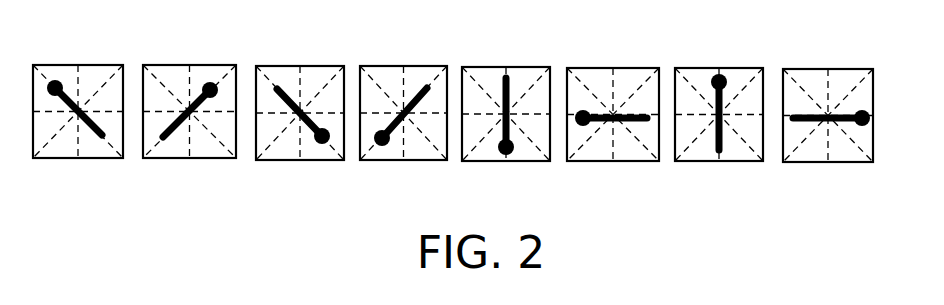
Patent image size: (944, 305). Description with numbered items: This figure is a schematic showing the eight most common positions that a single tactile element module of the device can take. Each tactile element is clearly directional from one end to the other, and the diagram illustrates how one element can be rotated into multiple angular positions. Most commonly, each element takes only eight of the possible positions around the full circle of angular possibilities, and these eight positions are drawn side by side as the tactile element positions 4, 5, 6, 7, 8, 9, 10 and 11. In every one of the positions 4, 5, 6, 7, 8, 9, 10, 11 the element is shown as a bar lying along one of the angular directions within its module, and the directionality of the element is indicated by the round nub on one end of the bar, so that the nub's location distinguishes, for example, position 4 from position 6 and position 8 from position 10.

The tactile element position 4 is at (45, 158).
The tactile element position 5 is at (157, 158).
The tactile element position 6 is at (265, 160).
The tactile element position 7 is at (370, 160).
The tactile element position 8 is at (530, 162).
The tactile element position 9 is at (643, 162).
The tactile element position 10 is at (750, 162).
The tactile element position 11 is at (860, 162).